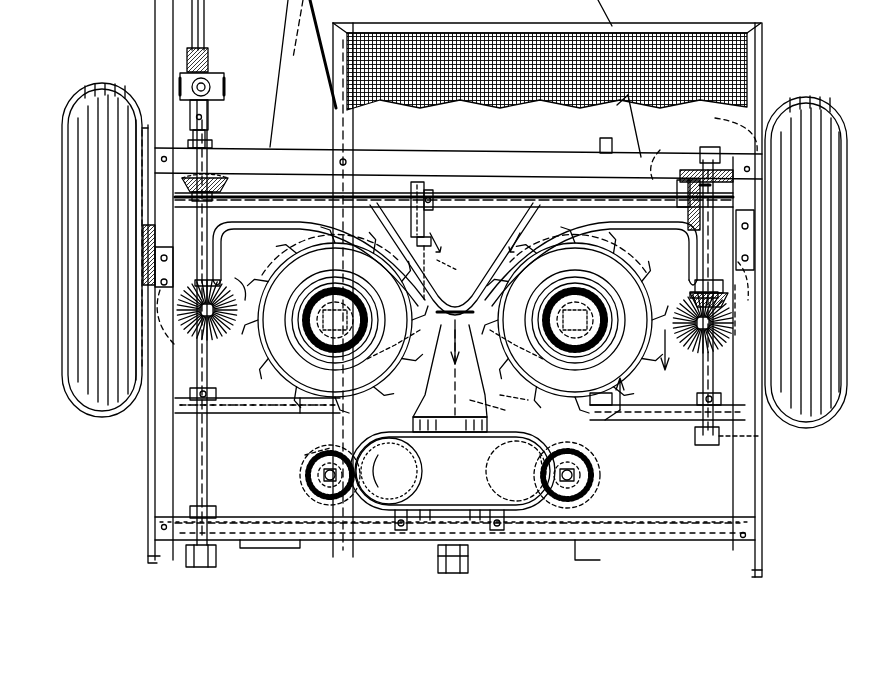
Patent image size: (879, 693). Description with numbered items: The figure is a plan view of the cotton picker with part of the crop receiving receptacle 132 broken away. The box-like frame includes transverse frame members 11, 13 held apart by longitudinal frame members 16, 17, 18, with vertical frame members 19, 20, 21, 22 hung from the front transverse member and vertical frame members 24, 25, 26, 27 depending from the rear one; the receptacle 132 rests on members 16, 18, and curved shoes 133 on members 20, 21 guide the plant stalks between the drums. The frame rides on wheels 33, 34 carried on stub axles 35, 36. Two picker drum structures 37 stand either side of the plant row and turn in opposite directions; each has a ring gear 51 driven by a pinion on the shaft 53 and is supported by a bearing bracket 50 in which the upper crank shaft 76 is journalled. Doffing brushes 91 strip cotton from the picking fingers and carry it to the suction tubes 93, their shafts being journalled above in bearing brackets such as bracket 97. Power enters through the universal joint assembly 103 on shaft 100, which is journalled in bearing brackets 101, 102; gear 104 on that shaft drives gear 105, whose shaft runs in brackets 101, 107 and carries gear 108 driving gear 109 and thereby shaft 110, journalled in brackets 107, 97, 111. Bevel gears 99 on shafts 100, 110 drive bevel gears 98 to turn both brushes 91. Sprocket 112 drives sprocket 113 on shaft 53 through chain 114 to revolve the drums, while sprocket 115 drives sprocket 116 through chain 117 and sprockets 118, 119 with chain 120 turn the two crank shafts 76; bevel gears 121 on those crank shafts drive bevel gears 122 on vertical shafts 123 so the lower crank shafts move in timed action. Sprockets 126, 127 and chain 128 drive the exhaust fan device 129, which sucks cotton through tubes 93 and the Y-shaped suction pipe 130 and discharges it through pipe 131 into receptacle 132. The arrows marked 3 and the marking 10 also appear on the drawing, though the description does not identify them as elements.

The direction arrows 3 is at (550, 365).
The drive shaft 10 is at (503, 198).
The transverse frame member 11 is at (448, 158).
The transverse frame member 13 is at (660, 542).
The longitudinal frame member 16 is at (355, 125).
The longitudinal frame member 17 is at (156, 452).
The longitudinal frame member 18 is at (748, 495).
The vertical frame member 19 is at (146, 128).
The vertical frame member 20 is at (316, 133).
The vertical frame member 21 is at (585, 148).
The vertical frame member 22 is at (722, 118).
The vertical frame member 24 is at (152, 562).
The vertical frame member 25 is at (312, 545).
The vertical frame member 26 is at (580, 562).
The vertical frame member 27 is at (755, 566).
The wheel 33 is at (115, 80).
The wheel 34 is at (803, 98).
The stub axle 35 is at (148, 232).
The stub axle 36 is at (758, 225).
The picker drum structure 37 is at (280, 380).
The bearing bracket 50 is at (305, 473).
The ring gear 51 is at (300, 338).
The shaft 53 is at (440, 300).
The upper crank shaft 76 is at (520, 396).
The doffing brush 91 is at (262, 360).
The suction tube 93 is at (660, 222).
The bearing bracket 97 is at (757, 262).
The bevel gear 98 is at (208, 338).
The bevel gear 99 is at (740, 266).
The shaft 100 is at (208, 456).
The bearing bracket 101 is at (262, 181).
The bearing bracket 102 is at (216, 563).
The universal joint assembly 103 is at (209, 12).
The gear 104 is at (212, 158).
The gear 105 is at (228, 168).
The bearing bracket 107 is at (660, 184).
The gear 108 is at (678, 160).
The gear 109 is at (737, 155).
The shaft 110 is at (705, 377).
The bearing bracket 111 is at (752, 441).
The sprocket 112 is at (433, 188).
The sprocket 113 is at (452, 260).
The chain 114 is at (430, 232).
The sprocket 115 is at (216, 392).
The sprocket 116 is at (330, 420).
The chain 117 is at (230, 413).
The sprocket 118 is at (697, 399).
The sprocket 119 is at (540, 417).
The chain 120 is at (598, 418).
The bevel gear 121 is at (593, 465).
The bevel gear 122 is at (598, 495).
The vertical shaft 123 is at (600, 483).
The sprocket 126 is at (216, 508).
The sprocket 127 is at (436, 556).
The chain 128 is at (228, 540).
The exhaust fan device 129 is at (485, 482).
The Y-shaped suction pipe 130 is at (425, 405).
The pipe 131 is at (389, 471).
The receptacle 132 is at (470, 32).
The curved shoe 133 is at (596, 22).